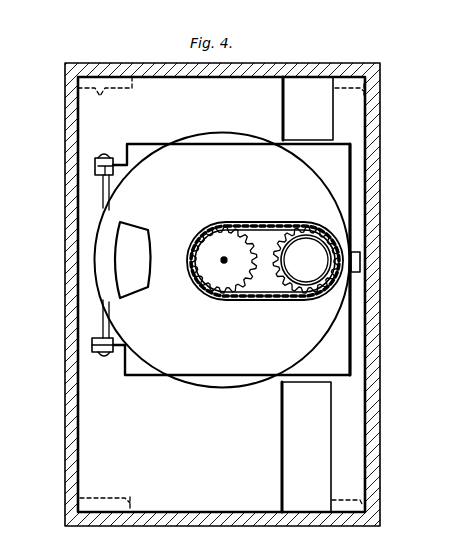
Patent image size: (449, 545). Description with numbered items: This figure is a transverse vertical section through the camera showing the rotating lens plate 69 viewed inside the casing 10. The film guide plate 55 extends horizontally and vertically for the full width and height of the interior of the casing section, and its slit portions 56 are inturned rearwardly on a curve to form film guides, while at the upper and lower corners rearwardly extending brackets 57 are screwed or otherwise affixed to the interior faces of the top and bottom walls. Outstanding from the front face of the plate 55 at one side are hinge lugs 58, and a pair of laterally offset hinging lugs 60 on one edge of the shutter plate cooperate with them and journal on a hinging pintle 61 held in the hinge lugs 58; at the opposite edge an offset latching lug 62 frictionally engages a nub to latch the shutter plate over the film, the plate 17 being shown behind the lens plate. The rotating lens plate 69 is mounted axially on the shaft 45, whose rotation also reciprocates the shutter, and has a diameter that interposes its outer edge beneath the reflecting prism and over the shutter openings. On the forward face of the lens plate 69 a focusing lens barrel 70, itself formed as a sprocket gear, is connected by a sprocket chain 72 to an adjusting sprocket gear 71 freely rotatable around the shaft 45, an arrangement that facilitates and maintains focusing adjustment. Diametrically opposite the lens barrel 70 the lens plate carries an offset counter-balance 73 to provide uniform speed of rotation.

The casing 10 is at (379, 526).
The supporting plate 17 is at (363, 318).
The shaft 45 is at (222, 263).
The film guide plate 55 is at (201, 428).
The slit portions 56 is at (283, 106).
The brackets 57 is at (98, 76).
The hinge lugs 58 is at (100, 353).
The hinging lugs 60 is at (117, 165).
The hinging pintle 61 is at (103, 187).
The latching lug 62 is at (360, 262).
The rotating lens plate 69 is at (222, 260).
The focusing lens barrel 70 is at (303, 226).
The adjusting sprocket gear 71 is at (205, 271).
The sprocket chain 72 is at (259, 298).
The counter-balance 73 is at (137, 253).